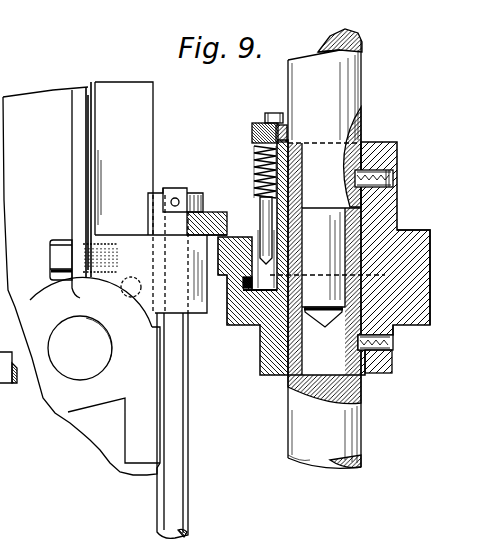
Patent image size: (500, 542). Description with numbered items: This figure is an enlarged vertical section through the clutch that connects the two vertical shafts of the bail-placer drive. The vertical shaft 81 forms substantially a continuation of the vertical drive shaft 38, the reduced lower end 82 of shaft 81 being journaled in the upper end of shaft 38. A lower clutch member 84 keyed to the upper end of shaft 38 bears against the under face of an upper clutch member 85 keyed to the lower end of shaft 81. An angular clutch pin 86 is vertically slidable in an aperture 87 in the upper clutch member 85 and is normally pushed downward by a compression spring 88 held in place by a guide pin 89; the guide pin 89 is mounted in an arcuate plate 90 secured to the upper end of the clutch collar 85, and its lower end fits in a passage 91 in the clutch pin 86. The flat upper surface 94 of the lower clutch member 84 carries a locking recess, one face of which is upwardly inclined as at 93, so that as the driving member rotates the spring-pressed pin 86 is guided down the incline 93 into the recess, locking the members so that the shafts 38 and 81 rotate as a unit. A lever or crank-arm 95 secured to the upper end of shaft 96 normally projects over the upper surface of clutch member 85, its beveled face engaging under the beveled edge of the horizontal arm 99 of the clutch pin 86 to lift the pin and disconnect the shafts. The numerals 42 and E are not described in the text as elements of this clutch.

The vertical drive shaft 38 is at (348, 463).
The cutter 42 is at (5, 385).
The vertical shaft 81 is at (363, 100).
The reduced lower end 82 is at (396, 216).
The lower clutch member 84 is at (432, 322).
The upper clutch member 85 is at (432, 233).
The clutch pin 86 is at (262, 315).
The aperture 87 is at (240, 225).
The compression spring 88 is at (256, 165).
The guide pin 89 is at (254, 134).
The arcuate plate 90 is at (287, 131).
The passage 91 is at (243, 296).
The inclined face 93 is at (228, 272).
The flat upper surface 94 is at (430, 284).
The lever or crank-arm 95 is at (208, 208).
The shaft 96 is at (173, 188).
The horizontal arm 99 is at (283, 215).
The axis E is at (455, 277).